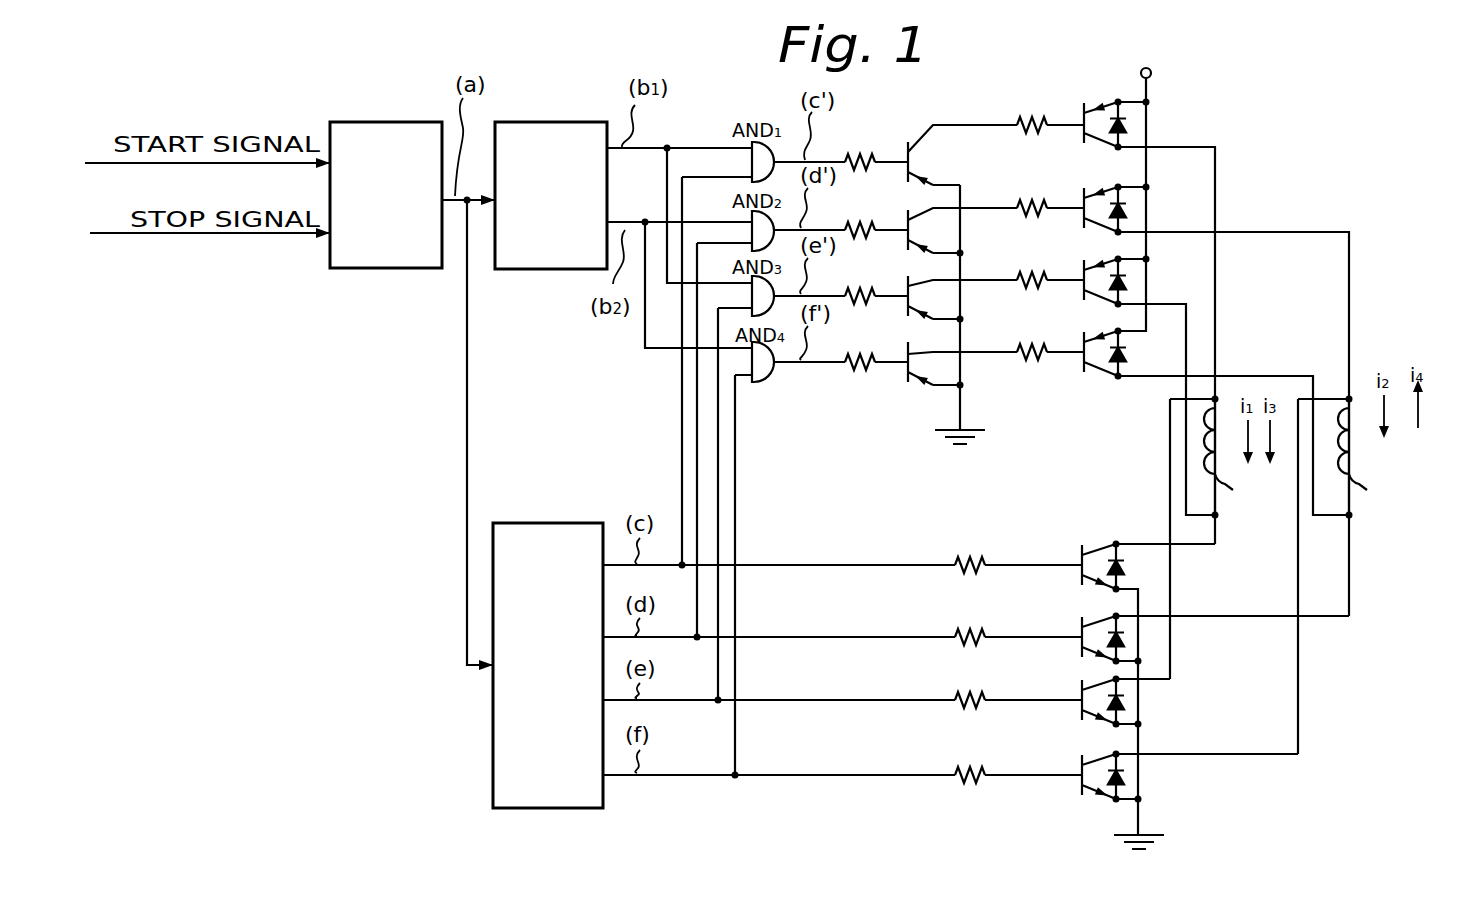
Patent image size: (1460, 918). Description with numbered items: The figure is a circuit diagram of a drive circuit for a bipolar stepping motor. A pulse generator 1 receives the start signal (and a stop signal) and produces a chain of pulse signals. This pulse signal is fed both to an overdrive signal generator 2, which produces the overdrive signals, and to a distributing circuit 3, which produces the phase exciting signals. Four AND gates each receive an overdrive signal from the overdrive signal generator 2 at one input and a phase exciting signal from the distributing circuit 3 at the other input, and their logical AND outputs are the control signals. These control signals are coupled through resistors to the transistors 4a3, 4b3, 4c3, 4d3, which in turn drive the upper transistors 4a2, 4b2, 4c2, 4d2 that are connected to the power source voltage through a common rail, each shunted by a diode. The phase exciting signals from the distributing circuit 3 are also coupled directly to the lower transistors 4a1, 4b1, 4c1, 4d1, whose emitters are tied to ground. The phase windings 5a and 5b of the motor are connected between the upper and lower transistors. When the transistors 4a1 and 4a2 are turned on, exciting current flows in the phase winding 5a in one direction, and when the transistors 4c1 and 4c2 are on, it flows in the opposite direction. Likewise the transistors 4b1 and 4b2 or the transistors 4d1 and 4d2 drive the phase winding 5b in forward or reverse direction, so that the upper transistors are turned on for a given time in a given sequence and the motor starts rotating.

The pulse generator 1 is at (378, 270).
The overdrive signal generator 2 is at (530, 270).
The distributing circuit 3 is at (493, 783).
The transistor 4a1 is at (1080, 547).
The transistor 4b1 is at (1079, 624).
The transistor 4c1 is at (1078, 688).
The transistor 4d1 is at (1078, 763).
The transistor 4a2 is at (1082, 108).
The transistor 4b2 is at (1084, 192).
The transistor 4c2 is at (1082, 265).
The transistor 4d2 is at (1081, 339).
The transistor 4a3 is at (906, 146).
The transistor 4b3 is at (906, 219).
The transistor 4c3 is at (906, 284).
The transistor 4d3 is at (906, 350).
The phase winding 5a is at (1233, 462).
The phase winding 5b is at (1366, 462).